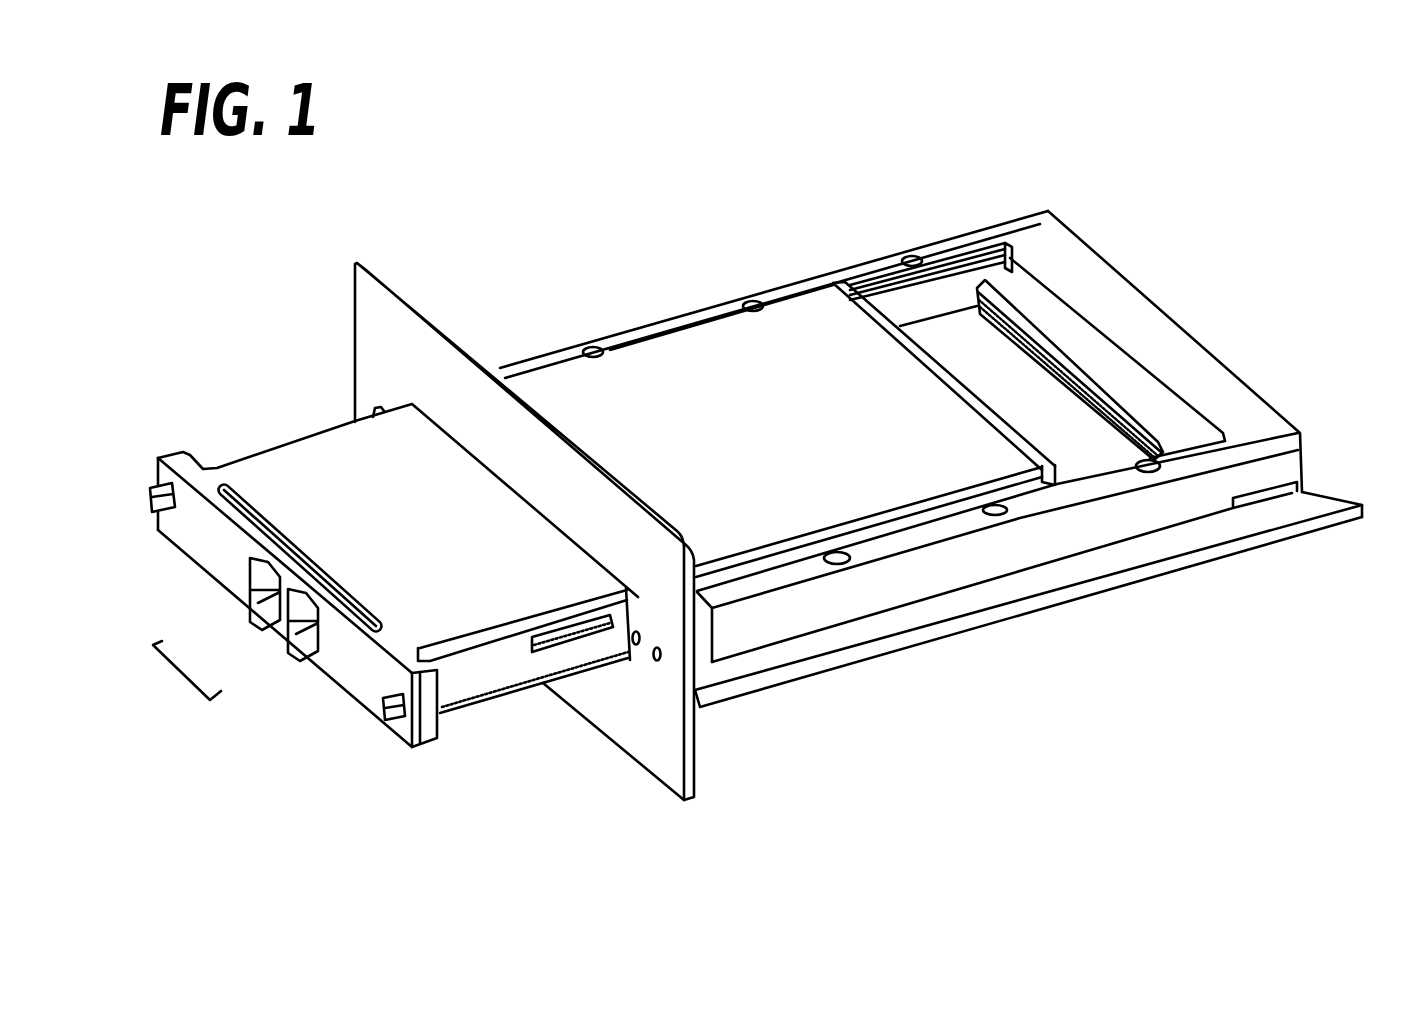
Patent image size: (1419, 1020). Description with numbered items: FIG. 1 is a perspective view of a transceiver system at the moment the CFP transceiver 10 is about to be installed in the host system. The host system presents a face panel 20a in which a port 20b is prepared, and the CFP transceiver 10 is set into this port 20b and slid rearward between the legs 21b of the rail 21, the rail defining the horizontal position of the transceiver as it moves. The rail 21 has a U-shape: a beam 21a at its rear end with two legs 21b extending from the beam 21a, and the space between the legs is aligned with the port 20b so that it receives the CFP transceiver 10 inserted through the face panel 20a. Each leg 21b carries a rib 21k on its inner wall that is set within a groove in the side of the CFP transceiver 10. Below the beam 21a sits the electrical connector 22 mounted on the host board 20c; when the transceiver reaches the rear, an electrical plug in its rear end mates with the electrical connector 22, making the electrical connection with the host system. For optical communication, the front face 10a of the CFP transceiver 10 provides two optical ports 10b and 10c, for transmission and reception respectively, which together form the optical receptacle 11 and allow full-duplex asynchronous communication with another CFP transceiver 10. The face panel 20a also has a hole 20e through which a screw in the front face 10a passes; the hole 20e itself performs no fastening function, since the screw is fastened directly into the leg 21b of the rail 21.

The CFP transceiver 10 is at (302, 490).
The front face 10a is at (190, 530).
The optical port 10b is at (260, 600).
The optical port 10c is at (293, 637).
The optical receptacle 11 is at (181, 675).
The face panel 20a is at (597, 693).
The port 20b is at (413, 408).
The host board 20c is at (1313, 487).
The hole 20e is at (640, 640).
The rail 21 is at (1013, 237).
The beam 21a is at (1147, 333).
The leg 21b is at (837, 590).
The rib 21k is at (883, 285).
The electrical connector 22 is at (1057, 323).